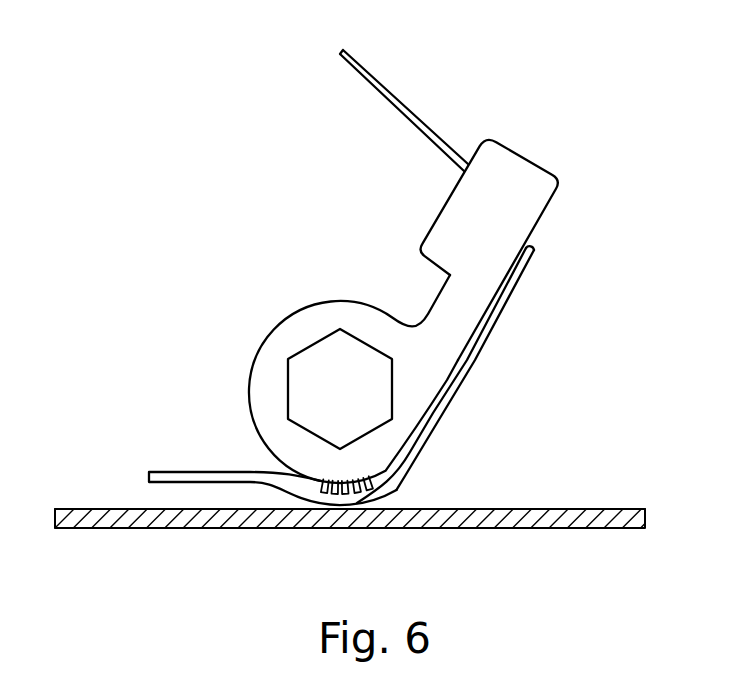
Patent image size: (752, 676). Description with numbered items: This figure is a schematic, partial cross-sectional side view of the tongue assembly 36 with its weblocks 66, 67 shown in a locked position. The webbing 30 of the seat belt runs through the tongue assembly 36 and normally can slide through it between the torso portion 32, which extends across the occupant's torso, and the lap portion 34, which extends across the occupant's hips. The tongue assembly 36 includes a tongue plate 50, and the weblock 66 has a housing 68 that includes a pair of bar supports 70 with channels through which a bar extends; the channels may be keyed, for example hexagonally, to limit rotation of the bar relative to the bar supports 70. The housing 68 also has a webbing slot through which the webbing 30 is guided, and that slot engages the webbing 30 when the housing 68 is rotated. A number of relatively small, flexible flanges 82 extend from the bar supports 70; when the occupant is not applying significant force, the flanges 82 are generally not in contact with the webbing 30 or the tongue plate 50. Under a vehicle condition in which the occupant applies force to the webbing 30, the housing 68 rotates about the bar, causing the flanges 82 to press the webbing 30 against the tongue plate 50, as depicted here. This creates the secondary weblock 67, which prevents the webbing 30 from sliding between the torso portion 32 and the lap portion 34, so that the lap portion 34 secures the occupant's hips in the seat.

The webbing 30 is at (469, 372).
The torso portion 32 is at (371, 77).
The lap portion 34 is at (188, 471).
The tongue assembly 36 is at (376, 340).
The tongue plate 50 is at (350, 551).
The weblock 66 is at (379, 286).
The secondary weblock 67 is at (305, 542).
The housing 68 is at (527, 158).
The bar supports 70 is at (270, 333).
The flexible flanges 82 is at (387, 480).